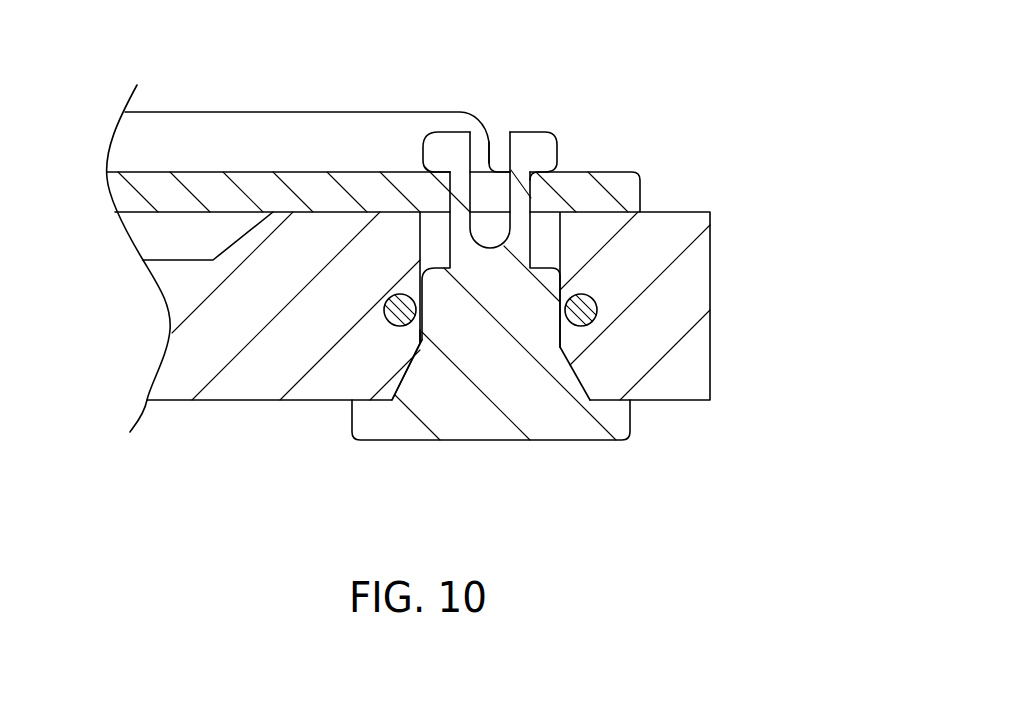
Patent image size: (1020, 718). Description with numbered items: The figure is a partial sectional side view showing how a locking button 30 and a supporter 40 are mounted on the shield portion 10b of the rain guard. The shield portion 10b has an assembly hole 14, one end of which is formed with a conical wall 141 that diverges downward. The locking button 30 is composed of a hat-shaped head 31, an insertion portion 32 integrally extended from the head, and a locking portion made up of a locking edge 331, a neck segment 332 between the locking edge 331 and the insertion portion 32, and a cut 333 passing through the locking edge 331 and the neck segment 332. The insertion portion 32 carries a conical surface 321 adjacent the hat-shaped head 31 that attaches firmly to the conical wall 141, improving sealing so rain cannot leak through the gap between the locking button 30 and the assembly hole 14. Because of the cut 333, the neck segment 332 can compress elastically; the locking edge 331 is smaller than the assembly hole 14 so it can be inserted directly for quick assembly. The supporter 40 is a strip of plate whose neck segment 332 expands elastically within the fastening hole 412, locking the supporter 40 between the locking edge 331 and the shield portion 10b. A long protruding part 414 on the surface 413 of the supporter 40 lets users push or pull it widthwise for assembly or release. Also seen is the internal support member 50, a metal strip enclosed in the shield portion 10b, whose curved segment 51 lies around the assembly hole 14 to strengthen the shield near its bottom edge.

The shield portion 10b is at (218, 388).
The assembly hole 14 is at (548, 247).
The conical wall 141 is at (422, 343).
The locking button 30 is at (535, 272).
The hat-shaped head 31 is at (630, 420).
The insertion portion 32 is at (563, 333).
The conical surface 321 is at (405, 370).
The locking edge 331 is at (557, 157).
The neck segment 332 is at (447, 190).
The cut 333 is at (502, 143).
The supporter 40 is at (373, 106).
The fastening hole 412 is at (512, 175).
The surface 413 is at (305, 178).
The protruding part 414 is at (180, 133).
The internal support member 50 is at (593, 300).
The curved segment 51 is at (397, 310).